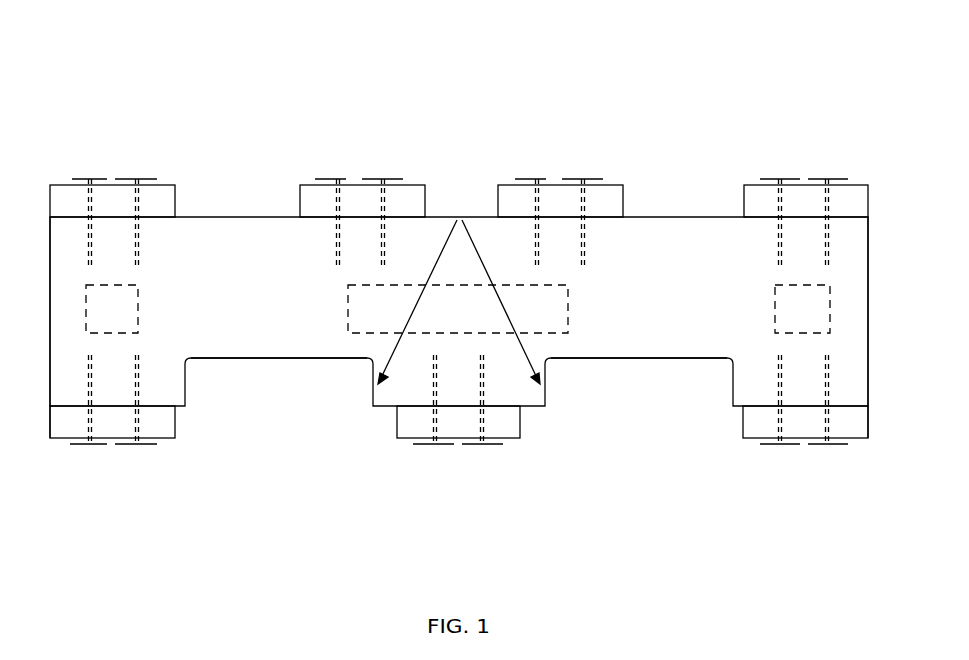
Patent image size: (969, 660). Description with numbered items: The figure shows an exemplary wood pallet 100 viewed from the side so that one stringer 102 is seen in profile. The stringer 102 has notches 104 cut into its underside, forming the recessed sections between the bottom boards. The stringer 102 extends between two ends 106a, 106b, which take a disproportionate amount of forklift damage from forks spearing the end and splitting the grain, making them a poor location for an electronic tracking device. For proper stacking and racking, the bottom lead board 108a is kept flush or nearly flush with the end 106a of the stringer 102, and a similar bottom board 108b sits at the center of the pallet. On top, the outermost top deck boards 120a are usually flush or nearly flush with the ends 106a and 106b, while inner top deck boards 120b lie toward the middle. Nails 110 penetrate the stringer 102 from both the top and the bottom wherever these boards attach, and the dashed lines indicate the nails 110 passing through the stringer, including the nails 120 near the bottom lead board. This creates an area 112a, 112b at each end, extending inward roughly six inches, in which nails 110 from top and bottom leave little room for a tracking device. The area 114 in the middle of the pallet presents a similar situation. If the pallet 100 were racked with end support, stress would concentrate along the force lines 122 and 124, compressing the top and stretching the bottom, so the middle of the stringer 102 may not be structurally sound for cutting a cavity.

The wood pallet 100 is at (424, 52).
The stringer 102 is at (58, 307).
The notch 104 is at (280, 360).
The end of stringer 106a is at (50, 283).
The end of stringer 106b is at (868, 297).
The bottom lead board 108a is at (65, 425).
The bottom center protrusion 108b is at (410, 423).
The nails 110 is at (135, 180).
The area of stringer 112a is at (138, 320).
The area of stringer 112b is at (830, 320).
The middle area 114 is at (478, 320).
The through vias 120 is at (168, 440).
The outermost top deck board 120a is at (63, 185).
The inner top protrusions 120b is at (310, 185).
The force line 122 is at (392, 350).
The force line 124 is at (528, 350).